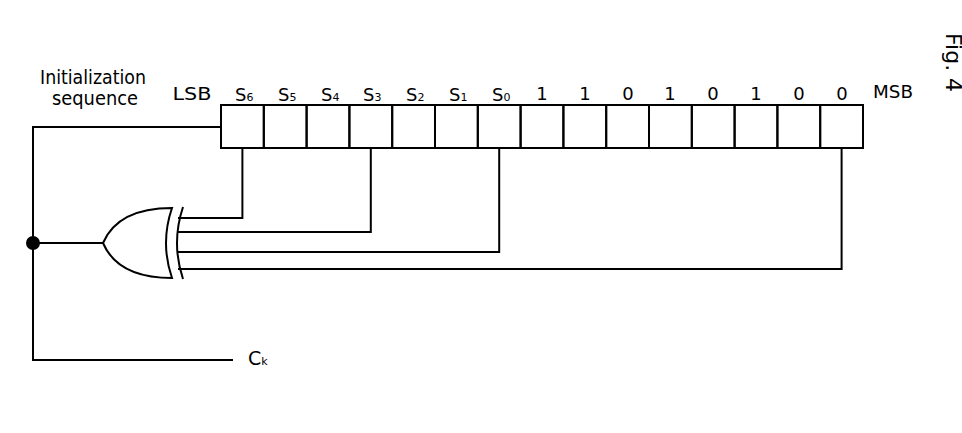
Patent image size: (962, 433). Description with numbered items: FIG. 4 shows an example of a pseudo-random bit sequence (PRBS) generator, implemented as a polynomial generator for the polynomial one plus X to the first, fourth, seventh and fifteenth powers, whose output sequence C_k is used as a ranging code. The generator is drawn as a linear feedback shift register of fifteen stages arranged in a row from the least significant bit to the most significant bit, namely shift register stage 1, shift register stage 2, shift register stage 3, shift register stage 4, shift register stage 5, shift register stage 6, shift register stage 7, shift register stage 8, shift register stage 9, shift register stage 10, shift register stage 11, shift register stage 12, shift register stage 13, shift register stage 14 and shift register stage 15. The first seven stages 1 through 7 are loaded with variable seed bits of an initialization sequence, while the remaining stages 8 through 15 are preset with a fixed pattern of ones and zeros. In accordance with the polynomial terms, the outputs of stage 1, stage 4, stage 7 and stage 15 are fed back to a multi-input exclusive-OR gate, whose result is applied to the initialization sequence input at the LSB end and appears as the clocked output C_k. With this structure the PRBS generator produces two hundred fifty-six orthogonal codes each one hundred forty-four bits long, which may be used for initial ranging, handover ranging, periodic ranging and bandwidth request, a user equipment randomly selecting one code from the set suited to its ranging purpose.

The shift register stage 1 is at (242, 126).
The shift register stage 2 is at (285, 126).
The shift register stage 3 is at (328, 126).
The shift register stage 4 is at (370, 126).
The shift register stage 5 is at (413, 126).
The shift register stage 6 is at (456, 126).
The shift register stage 7 is at (499, 126).
The shift register stage 8 is at (542, 126).
The shift register stage 9 is at (584, 126).
The shift register stage 10 is at (627, 126).
The shift register stage 11 is at (670, 126).
The shift register stage 12 is at (713, 126).
The shift register stage 13 is at (756, 126).
The shift register stage 14 is at (798, 126).
The shift register stage 15 is at (841, 126).